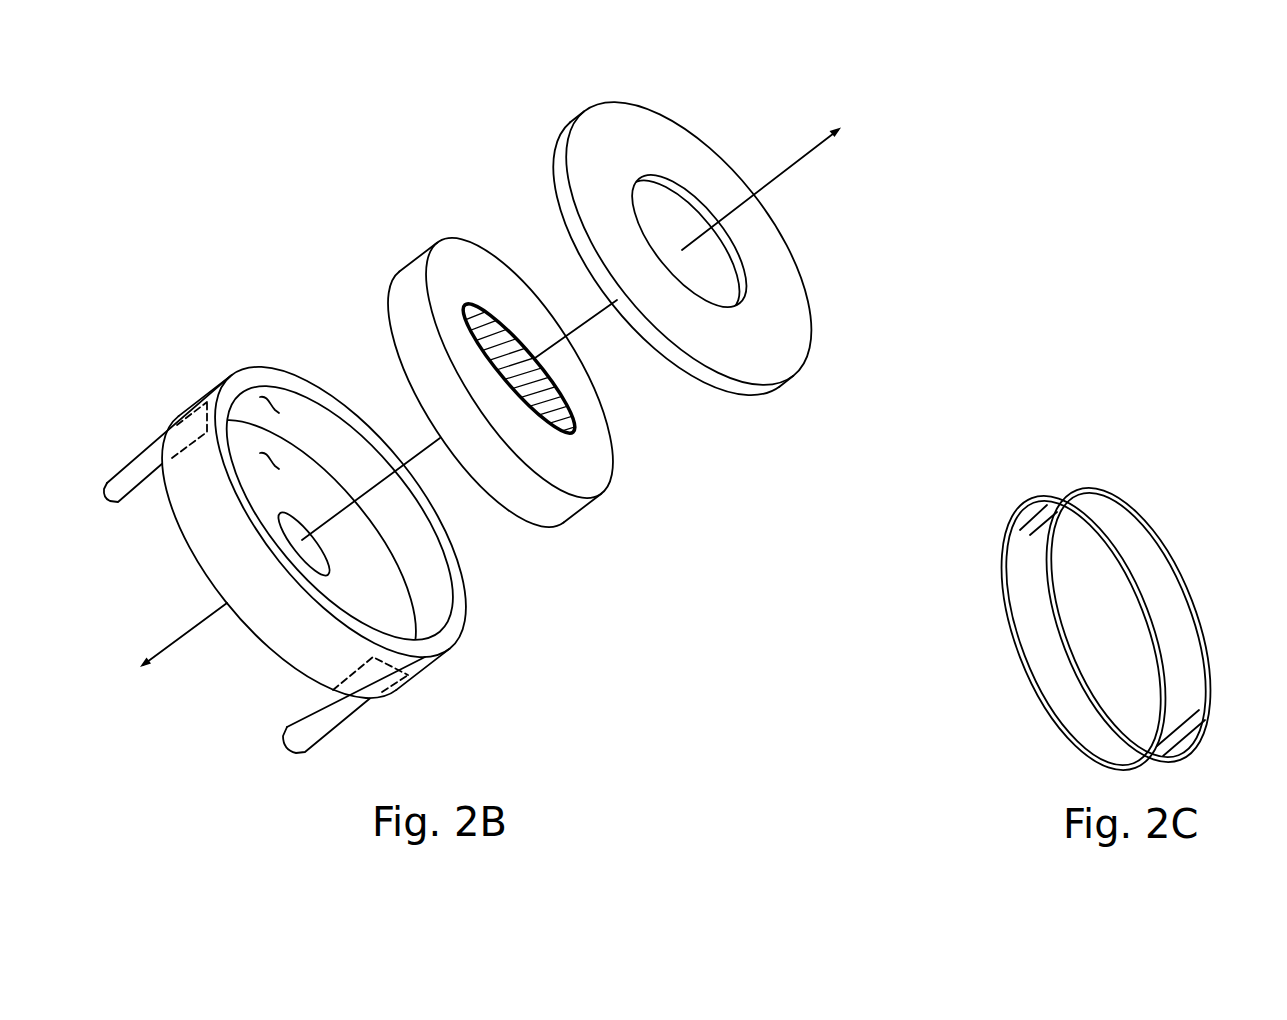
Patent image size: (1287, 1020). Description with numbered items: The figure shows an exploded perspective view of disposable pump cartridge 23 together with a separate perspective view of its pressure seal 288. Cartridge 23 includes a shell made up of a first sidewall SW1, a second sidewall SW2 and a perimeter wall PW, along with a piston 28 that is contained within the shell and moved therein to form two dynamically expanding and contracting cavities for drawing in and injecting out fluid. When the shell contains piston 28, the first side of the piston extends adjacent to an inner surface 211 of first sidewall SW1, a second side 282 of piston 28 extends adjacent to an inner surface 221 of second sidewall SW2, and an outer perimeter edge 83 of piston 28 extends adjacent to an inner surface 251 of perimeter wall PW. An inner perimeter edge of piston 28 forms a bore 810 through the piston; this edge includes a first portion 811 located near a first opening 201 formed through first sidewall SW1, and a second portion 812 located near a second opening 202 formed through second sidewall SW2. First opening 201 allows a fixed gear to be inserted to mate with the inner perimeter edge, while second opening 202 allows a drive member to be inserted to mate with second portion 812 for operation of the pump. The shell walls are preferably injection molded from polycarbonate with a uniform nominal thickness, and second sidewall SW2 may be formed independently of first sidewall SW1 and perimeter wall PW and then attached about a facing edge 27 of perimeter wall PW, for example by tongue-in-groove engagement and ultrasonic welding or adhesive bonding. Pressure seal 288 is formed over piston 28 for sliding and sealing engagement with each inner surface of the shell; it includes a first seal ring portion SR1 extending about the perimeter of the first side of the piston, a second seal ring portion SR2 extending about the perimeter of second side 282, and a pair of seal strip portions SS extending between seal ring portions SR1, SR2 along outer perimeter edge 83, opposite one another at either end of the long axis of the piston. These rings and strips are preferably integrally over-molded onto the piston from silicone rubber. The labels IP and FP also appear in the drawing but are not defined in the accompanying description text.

In FIG. 2B, the inner surface of second sidewall 221 is at (561, 199).
In FIG. 2B, the second portion of inner perimeter edge 812 is at (477, 308).
In FIG. 2B, the piston 28 is at (317, 291).
In FIG. 2B, the first portion of inner perimeter edge 811 is at (503, 367).
In FIG. 2B, the inner surface of perimeter wall 251 is at (276, 383).
In FIG. 2B, the facing edge of perimeter wall 27 is at (226, 392).
In FIG. 2B, the inner surface of first sidewall 211 is at (280, 452).
In FIG. 2B, the first opening 201 is at (293, 527).
In FIG. 2B, the inner plate IP is at (145, 463).
In FIG. 2B, the bore 810 is at (503, 343).
In FIG. 2B, the second opening 202 is at (715, 261).
In FIG. 2B, the second sidewall SW2 is at (673, 243).
In FIG. 2B, the second side of piston 282 is at (597, 463).
In FIG. 2B, the pressure seal 288 is at (596, 498).
In FIG. 2C, the pressure seal 288 is at (1099, 625).
In FIG. 2B, the outer perimeter edge of piston 83 is at (562, 513).
In FIG. 2B, the first sidewall SW1 is at (392, 585).
In FIG. 2B, the perimeter wall PW is at (407, 670).
In FIG. 2B, the front plate FP is at (335, 718).
In FIG. 2B, the disposable pump cartridge 23 is at (547, 720).
In FIG. 2C, the seal strip portions SS is at (1040, 513).
In FIG. 2C, the second seal ring portion SR2 is at (1187, 580).
In FIG. 2C, the first seal ring portion SR1 is at (1008, 595).